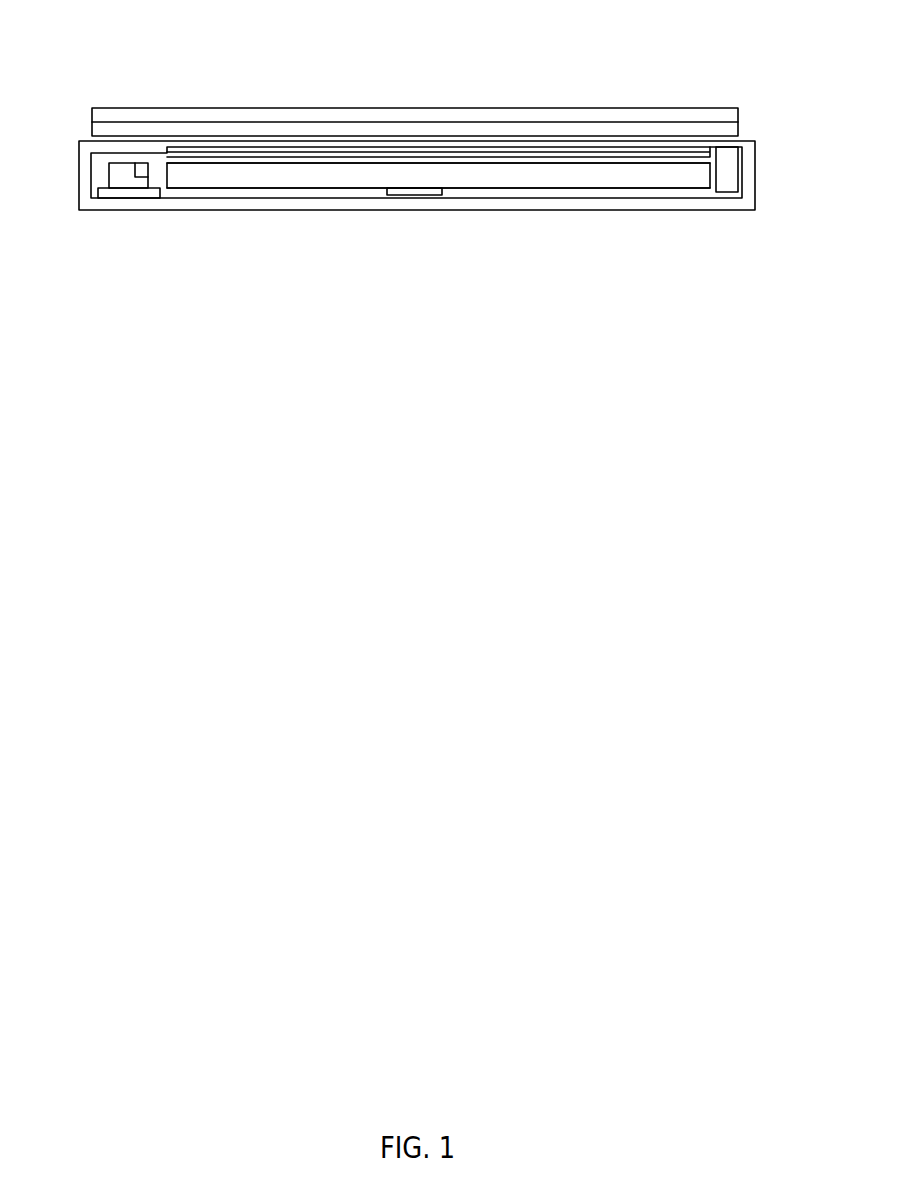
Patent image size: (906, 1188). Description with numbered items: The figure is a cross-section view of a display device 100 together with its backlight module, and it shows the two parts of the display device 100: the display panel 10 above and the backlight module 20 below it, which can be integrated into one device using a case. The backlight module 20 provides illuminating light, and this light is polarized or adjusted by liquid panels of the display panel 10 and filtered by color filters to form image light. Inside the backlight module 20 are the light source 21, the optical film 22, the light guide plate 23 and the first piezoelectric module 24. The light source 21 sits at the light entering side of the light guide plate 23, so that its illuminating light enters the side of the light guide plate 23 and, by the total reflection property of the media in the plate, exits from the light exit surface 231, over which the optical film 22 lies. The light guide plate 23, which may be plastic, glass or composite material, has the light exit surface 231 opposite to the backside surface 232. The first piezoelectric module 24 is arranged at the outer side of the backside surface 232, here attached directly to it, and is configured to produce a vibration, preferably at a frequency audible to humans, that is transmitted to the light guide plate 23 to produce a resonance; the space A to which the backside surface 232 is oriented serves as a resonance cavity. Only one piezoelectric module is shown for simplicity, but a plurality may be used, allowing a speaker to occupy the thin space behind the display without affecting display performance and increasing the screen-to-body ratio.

The display device 100 is at (108, 57).
The display panel 10 is at (742, 108).
The backlight module 20 is at (759, 143).
The light source 21 is at (125, 178).
The optical film 22 is at (523, 157).
The light guide plate 23 is at (243, 178).
The light exit surface 231 is at (312, 163).
The backside surface 232 is at (315, 188).
The first piezoelectric module 24 is at (414, 196).
The space A is at (507, 194).